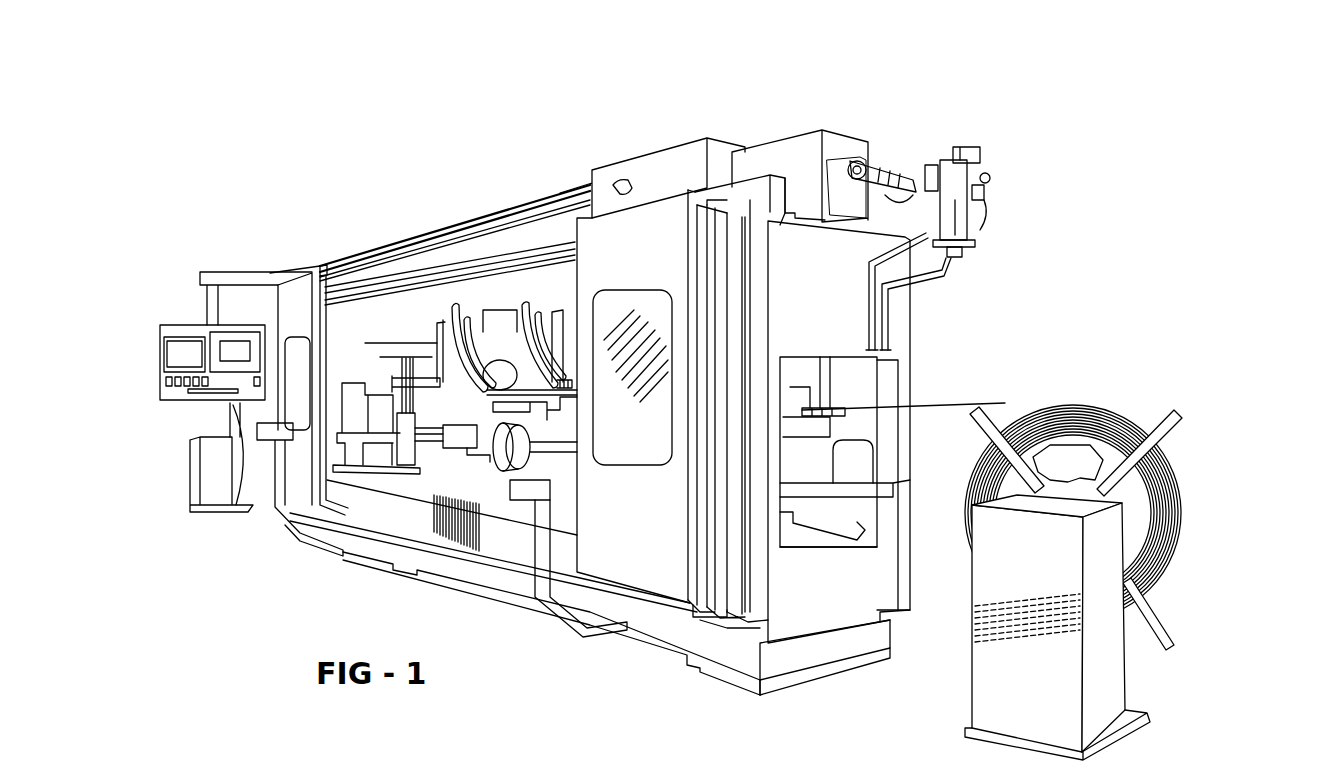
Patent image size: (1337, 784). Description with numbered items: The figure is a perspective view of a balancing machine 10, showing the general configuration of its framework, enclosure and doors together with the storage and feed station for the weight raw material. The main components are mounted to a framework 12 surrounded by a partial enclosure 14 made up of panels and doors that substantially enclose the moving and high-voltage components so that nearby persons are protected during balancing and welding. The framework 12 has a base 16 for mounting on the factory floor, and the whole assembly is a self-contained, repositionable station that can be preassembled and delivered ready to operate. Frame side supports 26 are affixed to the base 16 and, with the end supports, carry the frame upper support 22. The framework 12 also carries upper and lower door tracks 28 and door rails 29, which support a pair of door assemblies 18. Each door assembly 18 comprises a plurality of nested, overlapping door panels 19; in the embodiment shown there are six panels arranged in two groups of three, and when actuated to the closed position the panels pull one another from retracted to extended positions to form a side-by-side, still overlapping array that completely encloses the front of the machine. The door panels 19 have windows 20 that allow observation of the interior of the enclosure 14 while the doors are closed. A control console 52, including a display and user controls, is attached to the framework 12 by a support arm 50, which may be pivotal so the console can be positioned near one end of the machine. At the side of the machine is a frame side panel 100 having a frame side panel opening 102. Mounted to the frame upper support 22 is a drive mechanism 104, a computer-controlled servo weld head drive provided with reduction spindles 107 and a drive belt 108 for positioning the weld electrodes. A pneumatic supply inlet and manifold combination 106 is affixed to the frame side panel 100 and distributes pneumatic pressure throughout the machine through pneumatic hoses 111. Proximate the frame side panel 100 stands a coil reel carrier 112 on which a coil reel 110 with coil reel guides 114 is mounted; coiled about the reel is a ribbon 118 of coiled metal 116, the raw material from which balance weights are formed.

The balancing machine 10 is at (1087, 73).
The framework 12 is at (378, 515).
The enclosure 14 is at (750, 613).
The base 16 is at (538, 623).
The door assembly 18 is at (693, 620).
The door panel 19 is at (293, 300).
The window 20 is at (620, 310).
The frame upper support 22 is at (753, 193).
The frame side support 26 is at (525, 549).
The door track 28 is at (433, 552).
The door rail 29 is at (437, 260).
The support arm 50 is at (207, 273).
The control console 52 is at (167, 392).
The frame side panel 100 is at (838, 322).
The frame side panel opening 102 is at (910, 368).
The drive mechanism 104 is at (907, 187).
The pneumatic supply inlet and manifold combination 106 is at (957, 218).
The reduction spindle 107 is at (870, 177).
The drive belt 108 is at (843, 160).
The coil reel 110 is at (1173, 475).
The pneumatic hose 111 is at (947, 282).
The coil reel carrier 112 is at (210, 493).
The coil reel guide 114 is at (1173, 637).
The coiled metal 116 is at (1183, 562).
The ribbon 118 is at (1005, 403).